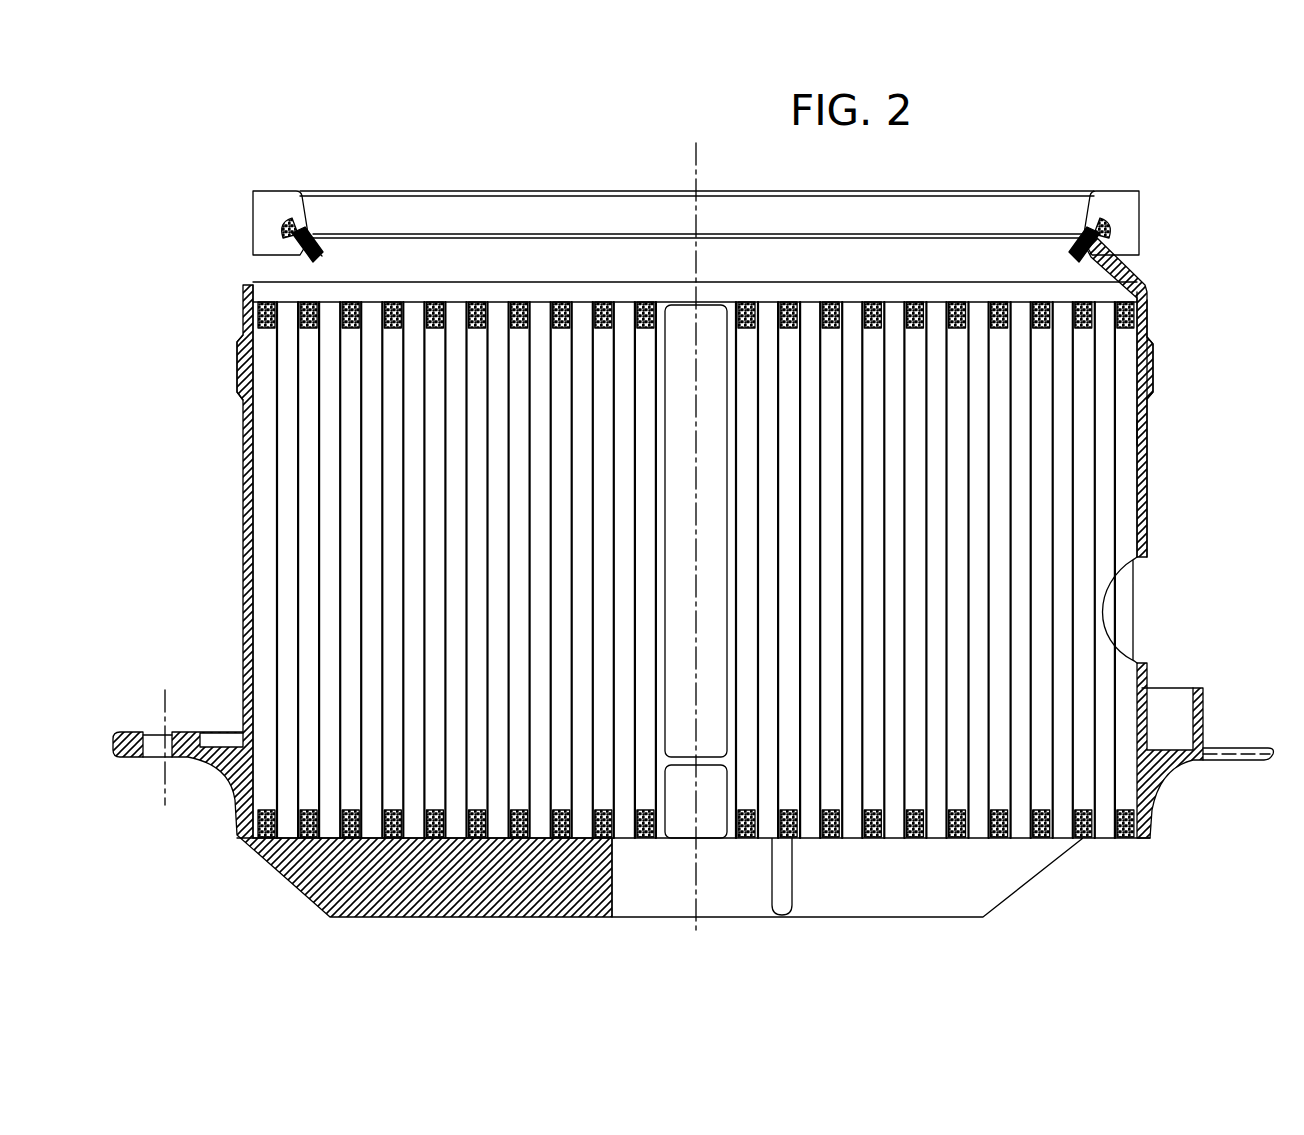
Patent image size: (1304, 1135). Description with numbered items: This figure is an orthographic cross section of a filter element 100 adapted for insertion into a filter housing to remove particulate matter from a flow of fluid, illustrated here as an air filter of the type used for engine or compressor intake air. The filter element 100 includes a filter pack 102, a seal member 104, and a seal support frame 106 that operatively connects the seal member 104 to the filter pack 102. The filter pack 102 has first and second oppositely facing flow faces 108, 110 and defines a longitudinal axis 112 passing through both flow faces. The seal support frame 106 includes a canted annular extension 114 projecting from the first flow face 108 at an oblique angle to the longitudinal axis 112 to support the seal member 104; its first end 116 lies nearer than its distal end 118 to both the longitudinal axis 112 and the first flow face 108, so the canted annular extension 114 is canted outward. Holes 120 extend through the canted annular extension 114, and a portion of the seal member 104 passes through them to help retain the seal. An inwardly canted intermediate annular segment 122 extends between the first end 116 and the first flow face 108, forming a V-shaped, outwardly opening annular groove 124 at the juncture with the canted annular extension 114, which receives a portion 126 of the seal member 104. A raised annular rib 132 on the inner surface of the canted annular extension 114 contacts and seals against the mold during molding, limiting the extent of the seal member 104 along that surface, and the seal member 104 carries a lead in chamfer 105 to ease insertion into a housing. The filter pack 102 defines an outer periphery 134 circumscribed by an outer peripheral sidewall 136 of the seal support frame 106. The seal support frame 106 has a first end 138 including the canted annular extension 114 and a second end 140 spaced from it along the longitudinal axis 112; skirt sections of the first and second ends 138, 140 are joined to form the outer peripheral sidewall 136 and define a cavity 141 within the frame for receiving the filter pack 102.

The filter element 100 is at (1150, 140).
The filter pack 102 is at (1102, 555).
The seal member 104 is at (1118, 253).
The lead in chamfer 105 is at (255, 200).
The seal support frame 106 is at (1147, 323).
The first flow face 108 is at (1092, 301).
The second flow face 110 is at (1123, 838).
The longitudinal axis 112 is at (694, 152).
The canted annular extension 114 is at (1115, 230).
The first end of canted annular extension 116 is at (1082, 252).
The distal end of canted annular extension 118 is at (1112, 208).
The holes 120 is at (296, 236).
The inwardly canted intermediate annular segment 122 is at (318, 258).
The V-shaped annular groove 124 is at (247, 260).
The portion of seal member 126 is at (290, 240).
The raised annular rib 132 is at (357, 235).
The outer periphery 134 is at (1135, 600).
The outer peripheral sidewall 136 is at (1147, 508).
The first end of seal support frame 138 is at (1155, 375).
The second end of seal support frame 140 is at (1147, 670).
The cavity 141 is at (1130, 432).